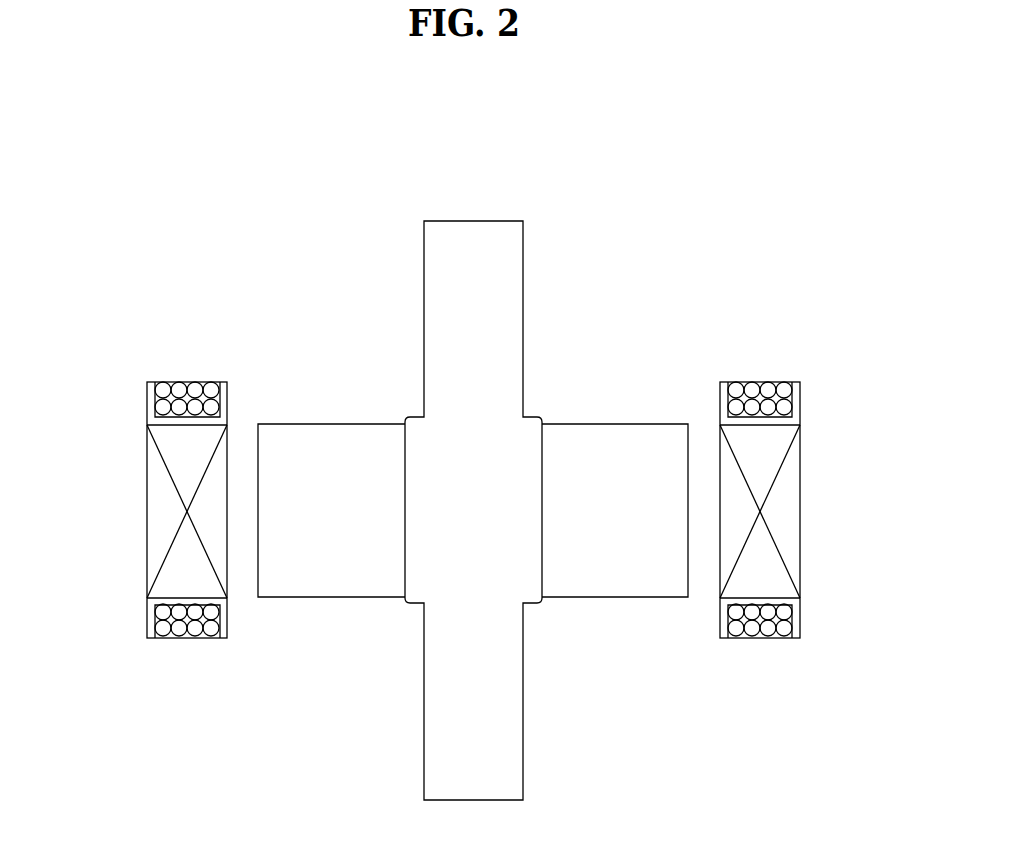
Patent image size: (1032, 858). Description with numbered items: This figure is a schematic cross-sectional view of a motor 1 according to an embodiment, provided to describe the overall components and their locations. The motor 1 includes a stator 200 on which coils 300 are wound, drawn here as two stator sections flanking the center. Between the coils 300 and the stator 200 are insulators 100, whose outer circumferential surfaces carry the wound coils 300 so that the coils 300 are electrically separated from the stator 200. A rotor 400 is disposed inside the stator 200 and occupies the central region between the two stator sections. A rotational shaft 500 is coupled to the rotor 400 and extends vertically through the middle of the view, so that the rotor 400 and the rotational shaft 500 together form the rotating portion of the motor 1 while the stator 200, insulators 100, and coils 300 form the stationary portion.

The motor 1 is at (63, 188).
The insulator 100 is at (147, 400).
The stator 200 is at (147, 506).
The coil 300 is at (196, 382).
The rotor 400 is at (332, 597).
The rotational shaft 500 is at (470, 221).